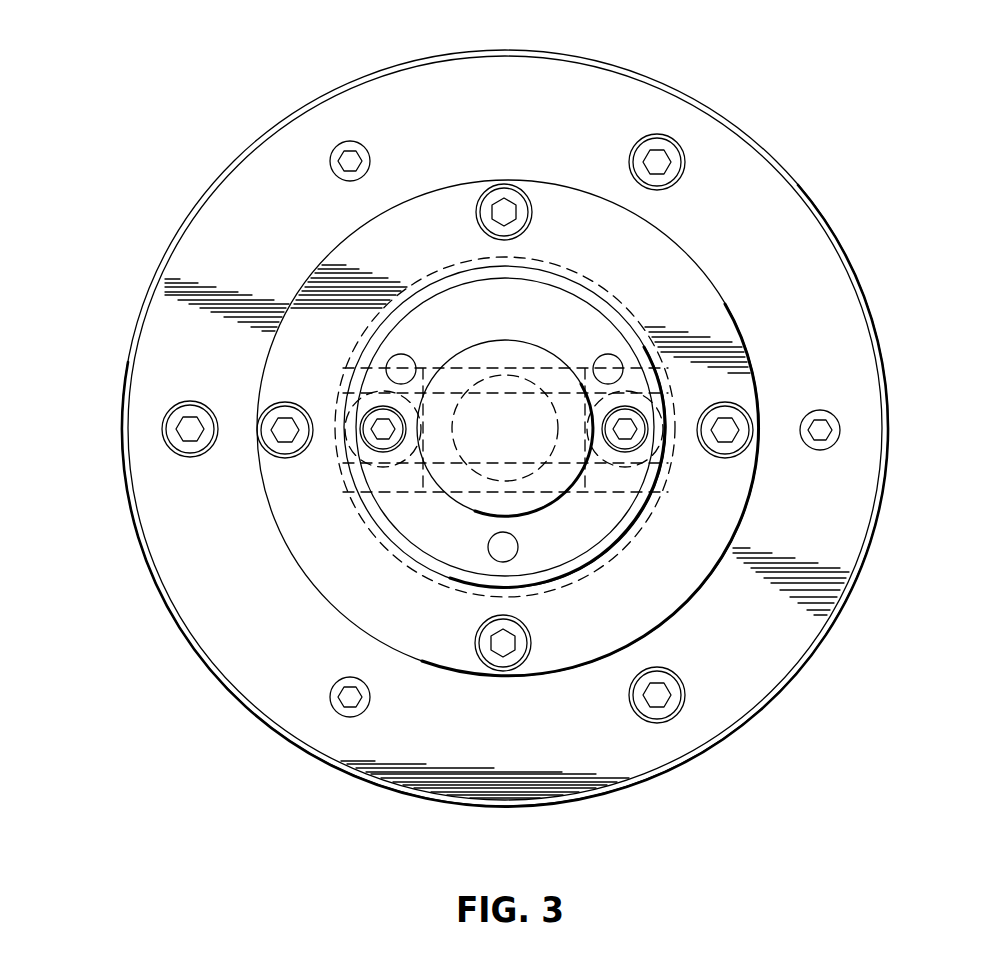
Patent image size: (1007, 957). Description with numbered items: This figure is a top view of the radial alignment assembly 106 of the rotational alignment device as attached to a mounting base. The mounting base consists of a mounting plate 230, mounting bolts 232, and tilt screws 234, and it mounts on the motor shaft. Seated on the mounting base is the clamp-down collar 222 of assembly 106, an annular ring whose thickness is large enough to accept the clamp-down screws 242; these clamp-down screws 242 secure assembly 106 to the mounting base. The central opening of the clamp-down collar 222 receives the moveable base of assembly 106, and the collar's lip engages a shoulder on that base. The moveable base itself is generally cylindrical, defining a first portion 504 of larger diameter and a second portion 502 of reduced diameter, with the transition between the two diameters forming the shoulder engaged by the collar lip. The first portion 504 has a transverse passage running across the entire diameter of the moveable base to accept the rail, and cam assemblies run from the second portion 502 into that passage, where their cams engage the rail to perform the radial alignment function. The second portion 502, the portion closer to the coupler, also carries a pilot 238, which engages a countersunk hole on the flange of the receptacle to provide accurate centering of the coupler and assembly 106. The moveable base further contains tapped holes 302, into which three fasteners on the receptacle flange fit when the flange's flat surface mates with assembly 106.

The radial alignment assembly 106 is at (250, 480).
The clamp-down collar 222 is at (288, 553).
The mounting plate 230 is at (810, 202).
The mounting bolts 232 is at (677, 717).
The tilt screws 234 is at (336, 148).
The pilot 238 is at (543, 498).
The clamp-down screws 242 is at (522, 192).
The tapped holes 302 is at (389, 360).
The second portion 502 is at (620, 313).
The first portion 504 is at (657, 357).